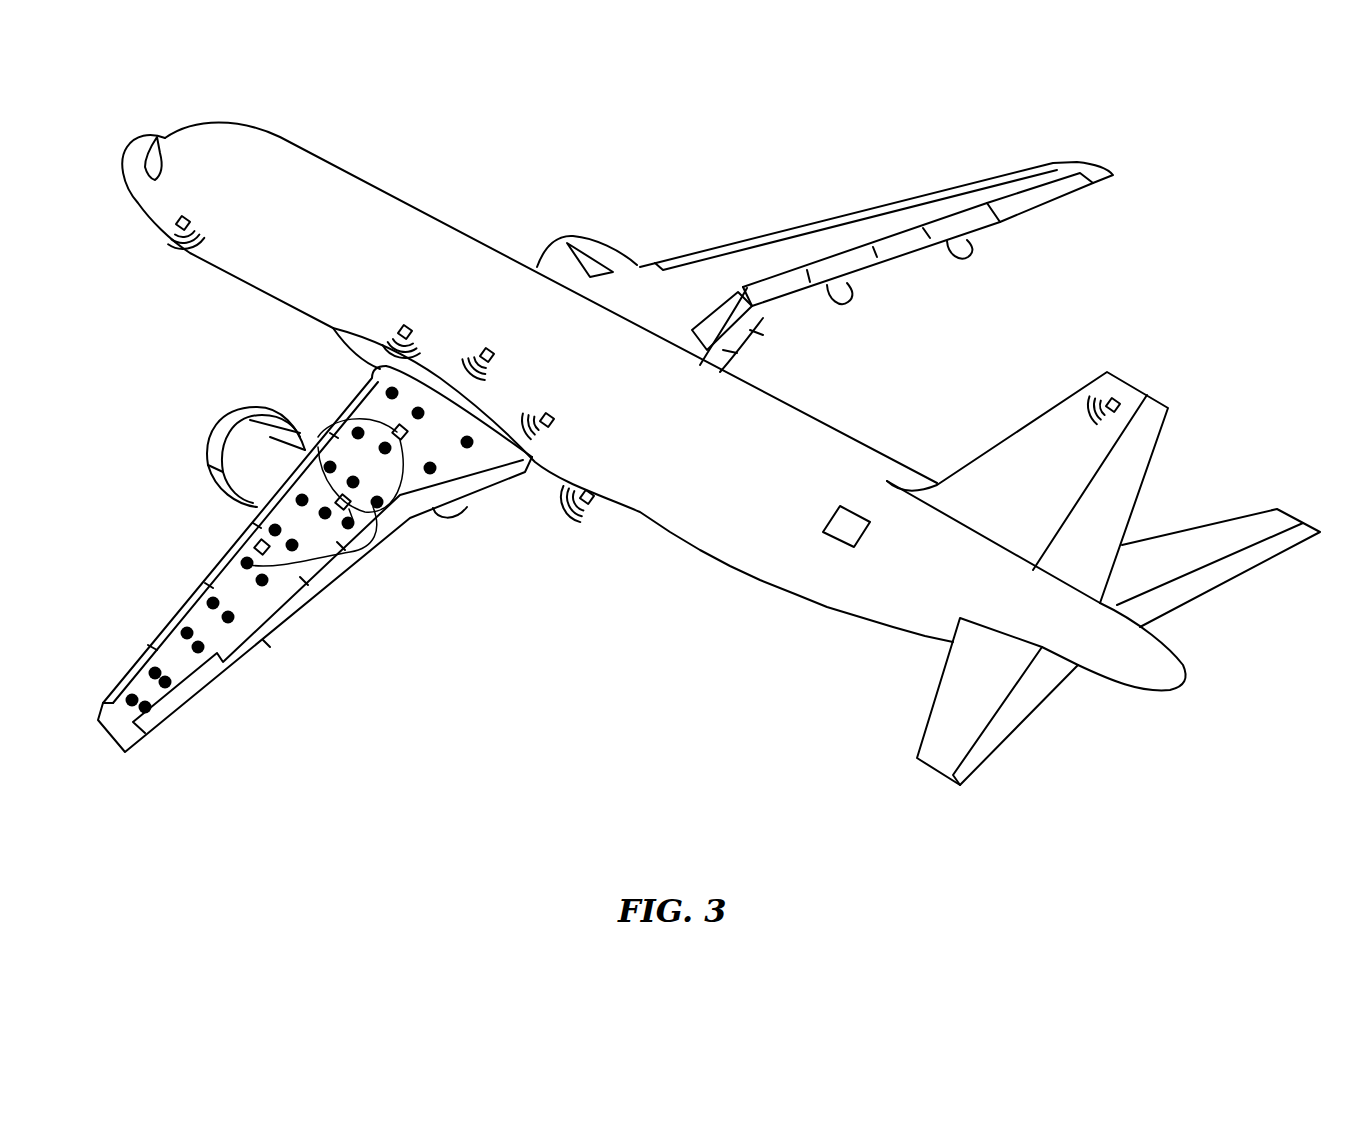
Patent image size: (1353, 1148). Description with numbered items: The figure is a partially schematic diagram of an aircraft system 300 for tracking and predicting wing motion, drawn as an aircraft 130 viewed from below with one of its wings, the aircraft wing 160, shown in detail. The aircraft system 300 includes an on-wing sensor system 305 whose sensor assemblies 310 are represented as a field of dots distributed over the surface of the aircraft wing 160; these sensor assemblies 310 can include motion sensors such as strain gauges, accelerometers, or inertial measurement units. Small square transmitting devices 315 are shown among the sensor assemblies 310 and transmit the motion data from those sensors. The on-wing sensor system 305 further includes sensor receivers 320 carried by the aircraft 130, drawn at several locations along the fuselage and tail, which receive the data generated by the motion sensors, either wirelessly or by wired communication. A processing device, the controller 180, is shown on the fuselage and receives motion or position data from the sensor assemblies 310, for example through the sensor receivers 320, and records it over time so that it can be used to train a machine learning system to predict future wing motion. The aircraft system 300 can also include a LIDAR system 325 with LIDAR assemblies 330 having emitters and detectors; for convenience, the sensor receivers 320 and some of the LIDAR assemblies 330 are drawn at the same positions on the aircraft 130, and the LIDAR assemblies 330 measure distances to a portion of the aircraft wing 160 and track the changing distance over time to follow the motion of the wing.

The aircraft 130 is at (281, 143).
The aircraft wing 160 is at (230, 550).
The controller 180 is at (832, 519).
The aircraft system 300 is at (1208, 146).
The on-wing sensor system 305 is at (479, 192).
The sensor assemblies 310 is at (353, 520).
The transmitting devices 315 is at (318, 440).
The sensor receivers 320 is at (172, 220).
The LIDAR system 325 is at (822, 368).
The LIDAR assemblies 330 is at (190, 218).